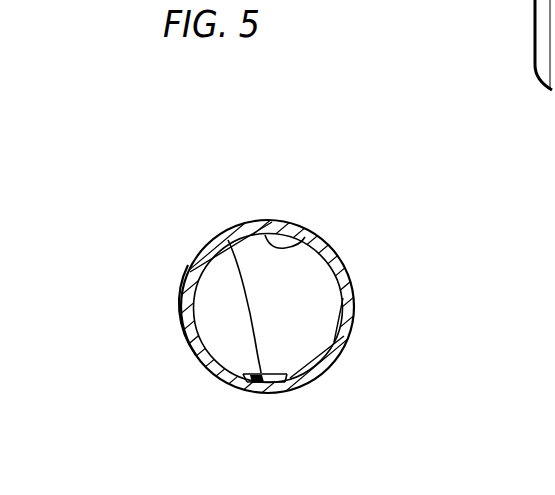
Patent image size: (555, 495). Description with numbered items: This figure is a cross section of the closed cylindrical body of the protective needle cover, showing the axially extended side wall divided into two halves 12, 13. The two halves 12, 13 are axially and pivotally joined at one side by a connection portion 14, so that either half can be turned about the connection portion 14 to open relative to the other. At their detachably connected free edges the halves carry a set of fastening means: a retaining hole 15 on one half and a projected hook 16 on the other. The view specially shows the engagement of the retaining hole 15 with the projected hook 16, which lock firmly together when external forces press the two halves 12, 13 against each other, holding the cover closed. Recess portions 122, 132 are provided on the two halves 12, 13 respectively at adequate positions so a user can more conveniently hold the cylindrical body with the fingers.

The half of side wall portion 12 is at (193, 342).
The recess portion 122 is at (183, 292).
The half of side wall portion 13 is at (345, 273).
The recess portion 132 is at (355, 322).
The connection portion 14 is at (307, 232).
The retaining hole 15 is at (243, 390).
The projected hook 16 is at (228, 240).